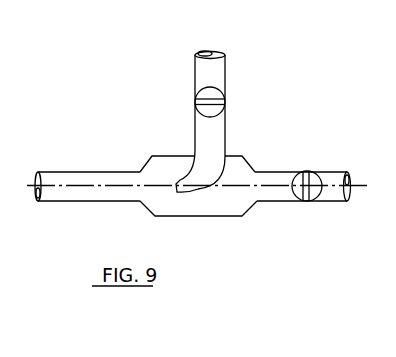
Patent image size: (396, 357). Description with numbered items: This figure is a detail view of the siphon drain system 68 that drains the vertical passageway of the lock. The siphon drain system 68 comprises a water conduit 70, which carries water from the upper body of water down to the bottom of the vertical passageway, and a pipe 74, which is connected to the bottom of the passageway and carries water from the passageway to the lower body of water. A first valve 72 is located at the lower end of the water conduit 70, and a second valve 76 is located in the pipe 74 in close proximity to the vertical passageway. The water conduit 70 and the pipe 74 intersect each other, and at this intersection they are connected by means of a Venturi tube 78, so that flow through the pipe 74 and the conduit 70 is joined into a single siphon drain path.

The connector assembly 68 is at (265, 124).
The vertical inlet tube 70 is at (227, 63).
The ball valve in vertical tube 72 is at (216, 98).
The horizontal tube 74 is at (326, 202).
The ball valve in horizontal tube 76 is at (299, 171).
The bent outlet end 78 is at (176, 189).